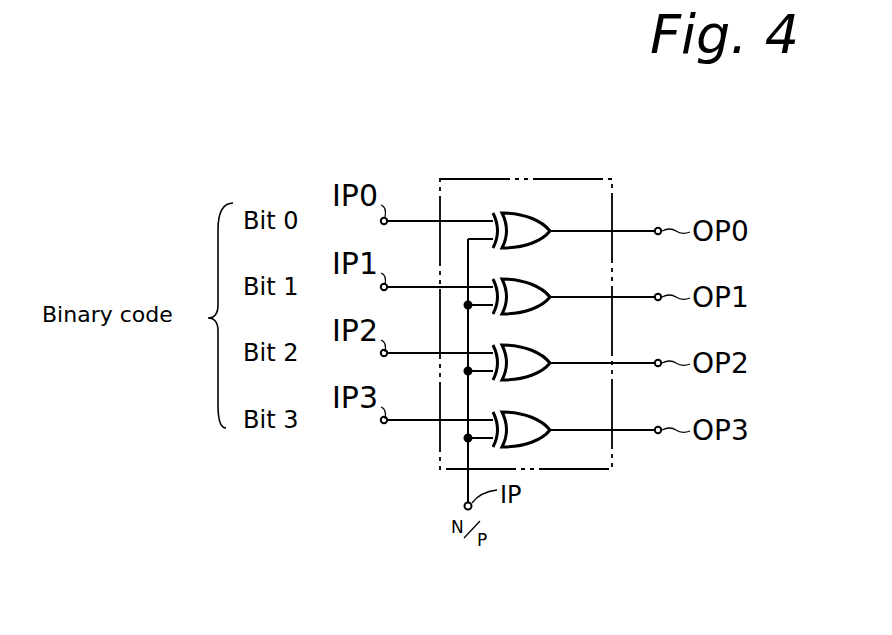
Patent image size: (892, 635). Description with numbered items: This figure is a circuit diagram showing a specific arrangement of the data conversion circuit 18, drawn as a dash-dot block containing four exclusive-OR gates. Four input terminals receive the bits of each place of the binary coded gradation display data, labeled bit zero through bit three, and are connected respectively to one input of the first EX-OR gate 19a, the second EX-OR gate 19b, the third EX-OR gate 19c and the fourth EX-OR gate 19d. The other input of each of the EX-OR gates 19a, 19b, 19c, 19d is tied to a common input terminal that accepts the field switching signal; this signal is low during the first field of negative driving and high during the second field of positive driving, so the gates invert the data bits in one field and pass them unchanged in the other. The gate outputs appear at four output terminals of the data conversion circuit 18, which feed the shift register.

The data conversion circuit 18 is at (493, 190).
The first EX-OR gate 19a is at (530, 221).
The second EX-OR gate 19b is at (530, 287).
The third EX-OR gate 19c is at (530, 353).
The fourth EX-OR gate 19d is at (530, 420).